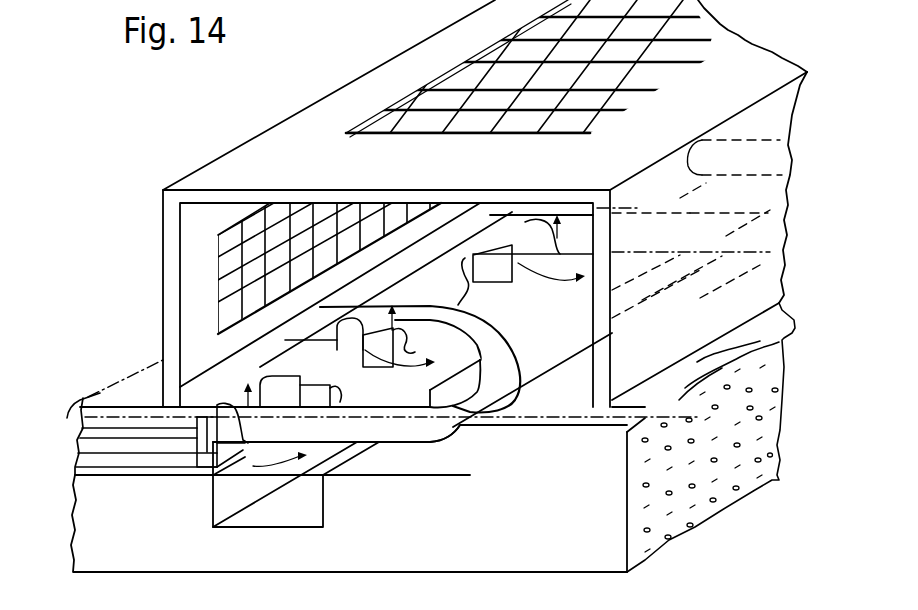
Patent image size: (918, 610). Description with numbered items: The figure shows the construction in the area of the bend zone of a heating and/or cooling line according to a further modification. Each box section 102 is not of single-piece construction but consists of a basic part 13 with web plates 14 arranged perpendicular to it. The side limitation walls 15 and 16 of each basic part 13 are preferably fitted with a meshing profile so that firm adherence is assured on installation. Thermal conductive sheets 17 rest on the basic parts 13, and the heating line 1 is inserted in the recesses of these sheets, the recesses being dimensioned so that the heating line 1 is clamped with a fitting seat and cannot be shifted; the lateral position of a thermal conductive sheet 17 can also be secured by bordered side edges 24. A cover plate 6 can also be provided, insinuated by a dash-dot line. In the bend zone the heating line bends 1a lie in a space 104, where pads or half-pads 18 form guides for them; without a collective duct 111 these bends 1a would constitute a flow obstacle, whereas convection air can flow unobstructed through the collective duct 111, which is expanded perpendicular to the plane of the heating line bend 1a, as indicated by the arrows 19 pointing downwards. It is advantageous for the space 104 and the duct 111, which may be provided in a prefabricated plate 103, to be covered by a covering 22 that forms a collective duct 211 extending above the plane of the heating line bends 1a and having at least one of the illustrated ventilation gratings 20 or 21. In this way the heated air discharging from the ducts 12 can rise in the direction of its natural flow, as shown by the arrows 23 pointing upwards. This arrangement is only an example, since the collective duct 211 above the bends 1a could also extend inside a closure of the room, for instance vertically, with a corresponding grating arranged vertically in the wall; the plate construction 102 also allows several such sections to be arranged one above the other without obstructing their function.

The heating line 1 is at (347, 432).
The heating line bend 1a is at (428, 433).
The cover plate 6 is at (133, 375).
The duct 12 is at (245, 432).
The basic part 13 is at (482, 280).
The web plate 14 is at (551, 290).
The side limitation wall 15 is at (348, 385).
The side limitation wall 16 is at (392, 364).
The thermal conductive sheet 17 is at (85, 400).
The pad or half-pad 18 is at (467, 377).
The arrow 19 is at (270, 474).
The ventilation grating 20 is at (233, 249).
The ventilation grating 21 is at (450, 88).
The covering 22 is at (320, 79).
The arrow 23 is at (345, 331).
The bordered side edge 24 is at (69, 406).
The box section 102 is at (108, 462).
The prefabricated plate 103 is at (170, 557).
The space 104 is at (397, 462).
The collective duct 111 is at (273, 510).
The collective duct 211 is at (189, 224).